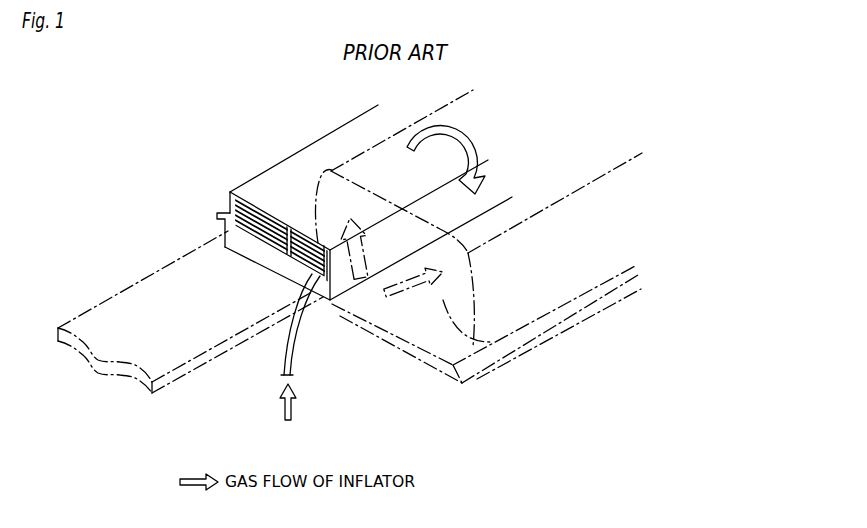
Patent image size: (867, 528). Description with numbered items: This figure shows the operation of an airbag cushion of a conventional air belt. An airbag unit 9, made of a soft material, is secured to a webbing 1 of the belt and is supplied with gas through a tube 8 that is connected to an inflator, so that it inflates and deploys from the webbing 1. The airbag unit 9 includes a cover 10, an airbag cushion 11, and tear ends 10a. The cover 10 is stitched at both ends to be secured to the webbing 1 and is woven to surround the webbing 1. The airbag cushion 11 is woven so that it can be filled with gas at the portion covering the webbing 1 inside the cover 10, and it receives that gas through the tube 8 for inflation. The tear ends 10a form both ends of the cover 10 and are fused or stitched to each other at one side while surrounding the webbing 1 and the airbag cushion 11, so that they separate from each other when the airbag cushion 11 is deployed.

The webbing 1 is at (112, 326).
The tube 8 is at (290, 340).
The airbag unit 9 is at (228, 158).
The cover 10 is at (297, 167).
The tear ends 10a is at (217, 212).
The airbag cushion 11 is at (265, 262).